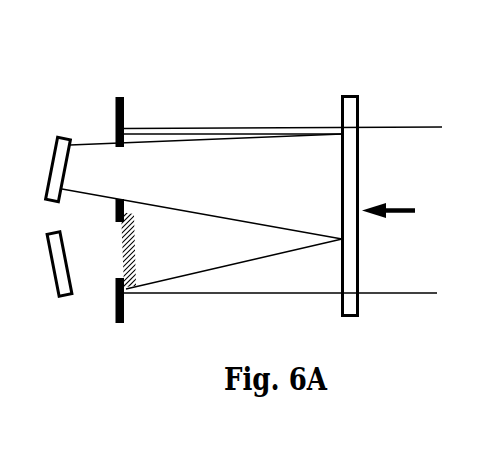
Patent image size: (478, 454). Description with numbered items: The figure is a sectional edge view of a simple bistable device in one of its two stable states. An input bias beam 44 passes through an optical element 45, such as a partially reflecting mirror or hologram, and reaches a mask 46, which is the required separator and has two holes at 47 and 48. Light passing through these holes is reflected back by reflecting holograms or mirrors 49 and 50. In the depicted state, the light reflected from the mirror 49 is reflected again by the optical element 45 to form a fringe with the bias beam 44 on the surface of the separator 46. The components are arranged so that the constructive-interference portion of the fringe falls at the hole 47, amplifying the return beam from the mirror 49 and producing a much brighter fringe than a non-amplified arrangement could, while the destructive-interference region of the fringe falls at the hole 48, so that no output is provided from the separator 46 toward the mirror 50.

The input bias beam 44 is at (392, 199).
The optical element 45 is at (347, 95).
The mask 46 is at (124, 106).
The hole 47 is at (127, 177).
The hole 48 is at (128, 250).
The reflecting hologram or mirror 49 is at (72, 152).
The reflecting hologram or mirror 50 is at (73, 277).